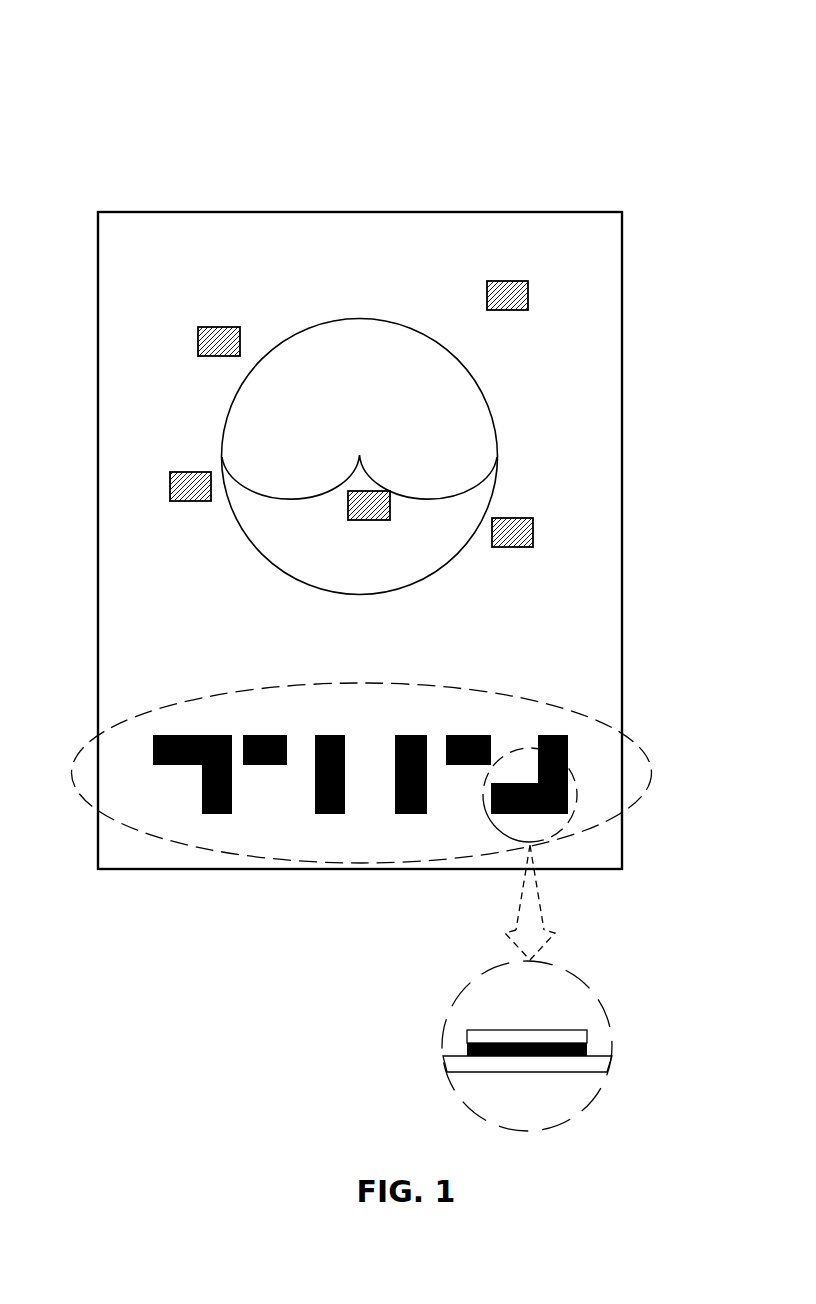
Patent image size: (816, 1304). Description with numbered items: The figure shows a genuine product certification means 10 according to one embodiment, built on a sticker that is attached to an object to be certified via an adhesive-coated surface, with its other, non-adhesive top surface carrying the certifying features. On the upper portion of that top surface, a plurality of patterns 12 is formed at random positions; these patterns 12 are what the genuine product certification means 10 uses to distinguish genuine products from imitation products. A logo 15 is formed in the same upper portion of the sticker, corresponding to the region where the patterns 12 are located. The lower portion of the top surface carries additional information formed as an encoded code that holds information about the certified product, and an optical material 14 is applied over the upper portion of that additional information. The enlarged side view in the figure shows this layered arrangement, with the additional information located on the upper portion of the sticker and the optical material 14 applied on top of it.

The genuine product certification means 10 is at (370, 182).
The patterns 12 is at (528, 531).
The optical material 14 is at (467, 1035).
The logo 15 is at (496, 422).